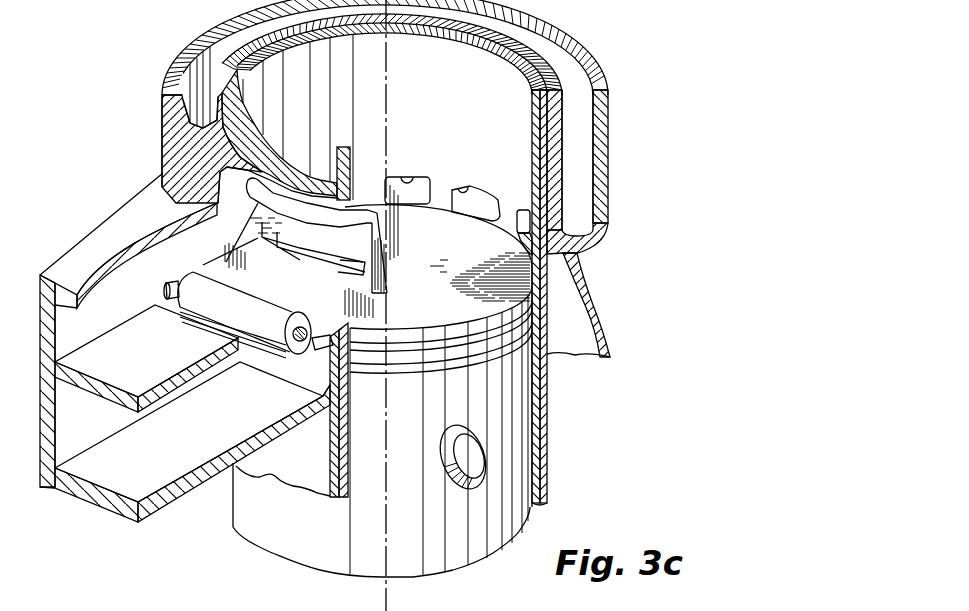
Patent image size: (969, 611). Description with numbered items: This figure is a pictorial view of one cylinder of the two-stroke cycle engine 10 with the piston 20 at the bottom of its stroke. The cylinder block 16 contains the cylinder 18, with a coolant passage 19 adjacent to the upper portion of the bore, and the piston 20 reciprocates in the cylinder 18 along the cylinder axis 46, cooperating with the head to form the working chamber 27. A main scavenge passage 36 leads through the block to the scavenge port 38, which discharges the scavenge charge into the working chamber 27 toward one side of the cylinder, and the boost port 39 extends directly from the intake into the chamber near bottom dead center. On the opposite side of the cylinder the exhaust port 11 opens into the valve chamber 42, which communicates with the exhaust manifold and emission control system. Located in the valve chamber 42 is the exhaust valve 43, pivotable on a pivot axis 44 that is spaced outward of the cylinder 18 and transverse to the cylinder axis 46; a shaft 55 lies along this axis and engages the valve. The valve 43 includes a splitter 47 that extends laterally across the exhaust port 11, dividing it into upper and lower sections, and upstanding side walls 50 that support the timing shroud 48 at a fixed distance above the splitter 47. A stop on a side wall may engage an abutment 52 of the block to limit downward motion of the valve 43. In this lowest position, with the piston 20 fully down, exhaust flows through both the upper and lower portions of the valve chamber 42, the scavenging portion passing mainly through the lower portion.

The two-stroke cycle engine 10 is at (164, 58).
The exhaust port 11 is at (353, 200).
The cylinder block 16 is at (602, 212).
The cylinder 18 is at (527, 482).
The coolant passage 19 is at (580, 176).
The piston 20 is at (262, 546).
The working chamber 27 is at (510, 78).
The main scavenge passage 36 is at (572, 330).
The scavenge port 38 is at (422, 180).
The boost port 39 is at (470, 192).
The valve chamber 42 is at (160, 198).
The exhaust valve 43 is at (258, 350).
The pivot axis 44 is at (168, 280).
The cylinder axis 46 is at (392, 147).
The splitter 47 is at (302, 275).
The timing shroud 48 is at (342, 268).
The side wall 50 is at (250, 228).
The abutment 52 is at (314, 344).
The shaft 55 is at (176, 283).